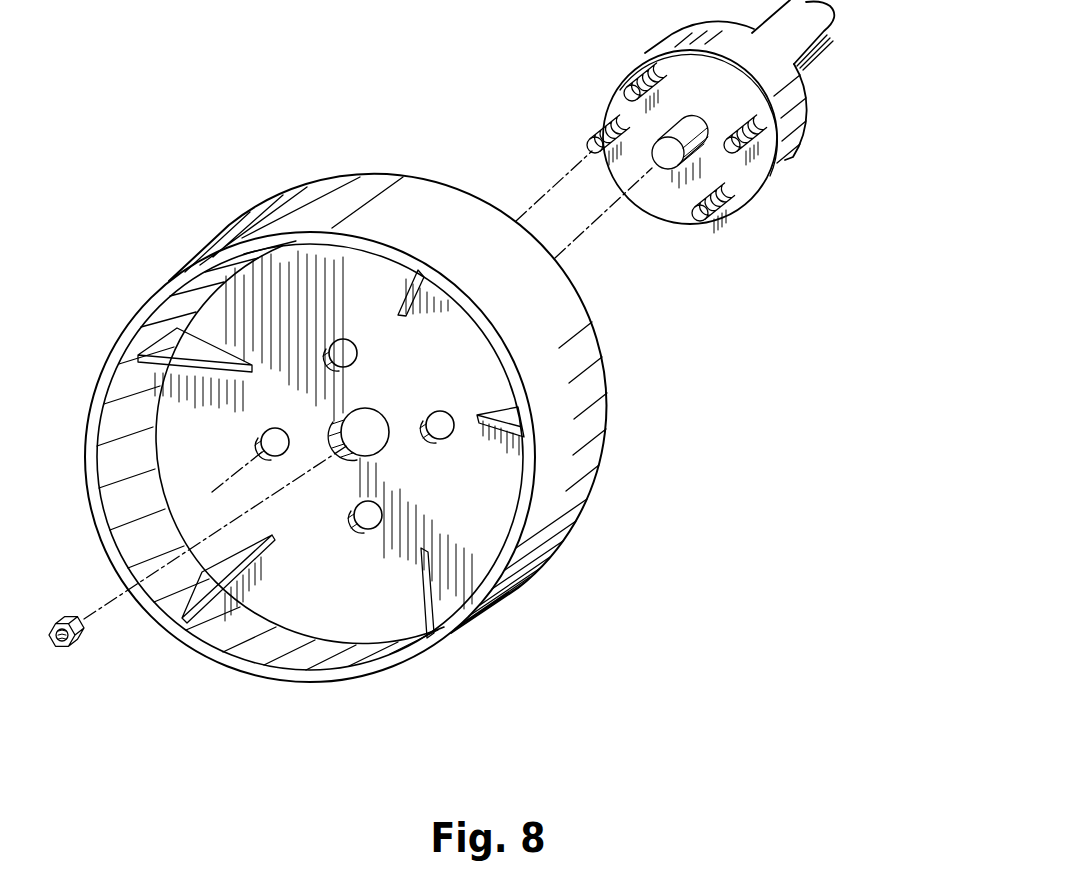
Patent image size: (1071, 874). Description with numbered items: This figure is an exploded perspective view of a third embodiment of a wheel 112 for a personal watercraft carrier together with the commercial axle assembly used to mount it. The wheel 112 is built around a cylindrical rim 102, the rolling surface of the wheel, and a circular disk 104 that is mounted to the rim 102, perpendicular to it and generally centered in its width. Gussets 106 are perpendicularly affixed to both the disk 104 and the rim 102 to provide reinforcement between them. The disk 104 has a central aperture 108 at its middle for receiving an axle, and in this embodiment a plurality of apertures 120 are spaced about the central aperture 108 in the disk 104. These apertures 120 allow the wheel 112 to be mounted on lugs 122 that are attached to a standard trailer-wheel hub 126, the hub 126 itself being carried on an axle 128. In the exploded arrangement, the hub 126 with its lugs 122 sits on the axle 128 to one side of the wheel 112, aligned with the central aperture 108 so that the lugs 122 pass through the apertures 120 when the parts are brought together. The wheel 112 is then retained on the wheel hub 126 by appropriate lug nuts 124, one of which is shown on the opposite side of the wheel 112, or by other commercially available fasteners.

The cylindrical rim 102 is at (437, 205).
The circular disk 104 is at (338, 298).
The gussets 106 is at (222, 368).
The central aperture 108 is at (342, 458).
The wheel 112 is at (330, 162).
The apertures 120 is at (273, 428).
The lugs 122 is at (703, 224).
The lug nuts 124 is at (77, 647).
The trailer-wheel hub 126 is at (798, 150).
The axle 128 is at (820, 40).